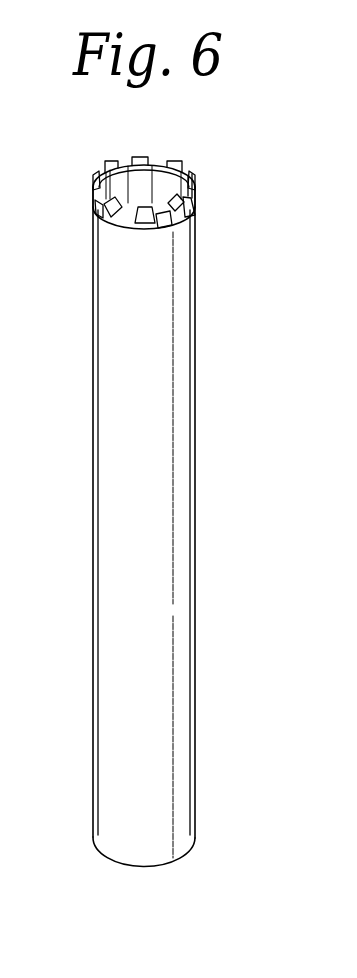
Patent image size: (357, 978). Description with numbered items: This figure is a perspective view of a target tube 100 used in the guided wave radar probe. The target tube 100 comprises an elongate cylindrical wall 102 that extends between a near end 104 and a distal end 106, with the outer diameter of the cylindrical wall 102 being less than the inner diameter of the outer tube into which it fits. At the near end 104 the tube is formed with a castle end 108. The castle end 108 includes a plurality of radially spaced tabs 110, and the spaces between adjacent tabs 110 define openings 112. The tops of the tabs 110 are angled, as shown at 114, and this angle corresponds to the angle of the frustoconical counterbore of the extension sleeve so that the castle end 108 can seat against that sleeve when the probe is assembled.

The target tube 100 is at (214, 596).
The cylindrical wall 102 is at (197, 708).
The near end 104 is at (200, 156).
The distal end 106 is at (178, 858).
The castle end 108 is at (158, 164).
The tabs 110 is at (113, 165).
The openings 112 is at (97, 215).
The angled tops of the tabs 114 is at (191, 196).